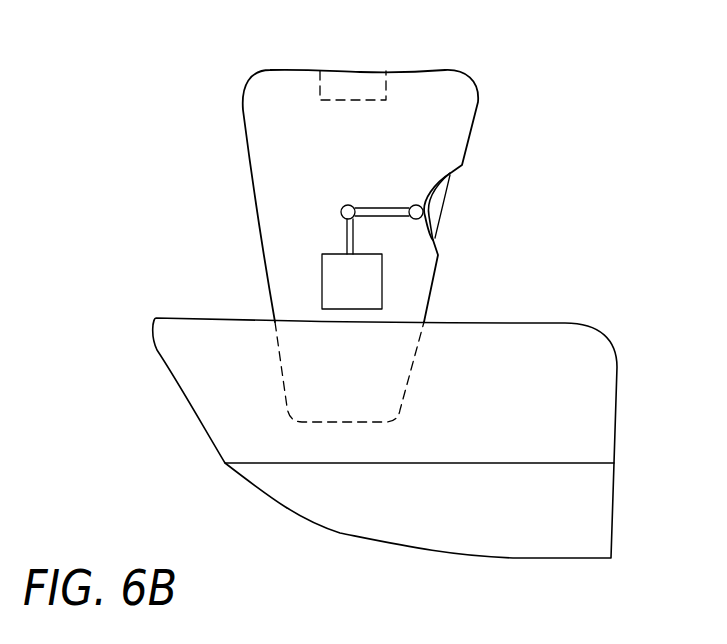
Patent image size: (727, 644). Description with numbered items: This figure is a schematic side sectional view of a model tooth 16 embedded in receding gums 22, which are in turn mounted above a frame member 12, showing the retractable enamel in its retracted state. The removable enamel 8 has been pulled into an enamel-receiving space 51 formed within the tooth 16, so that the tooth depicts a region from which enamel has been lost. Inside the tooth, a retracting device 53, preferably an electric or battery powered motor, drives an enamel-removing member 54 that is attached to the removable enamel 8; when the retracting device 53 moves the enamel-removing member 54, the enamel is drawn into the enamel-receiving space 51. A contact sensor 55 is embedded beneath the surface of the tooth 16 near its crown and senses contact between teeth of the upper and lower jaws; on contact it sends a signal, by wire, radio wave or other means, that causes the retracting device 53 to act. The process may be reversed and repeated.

The removable enamel 8 is at (437, 203).
The frame member 12 is at (603, 515).
The tooth 16 is at (403, 107).
The receding gums 22 is at (600, 407).
The enamel-receiving space 51 is at (458, 183).
The retracting device 53 is at (333, 295).
The enamel-removing member 54 is at (317, 228).
The contact sensor 55 is at (335, 77).